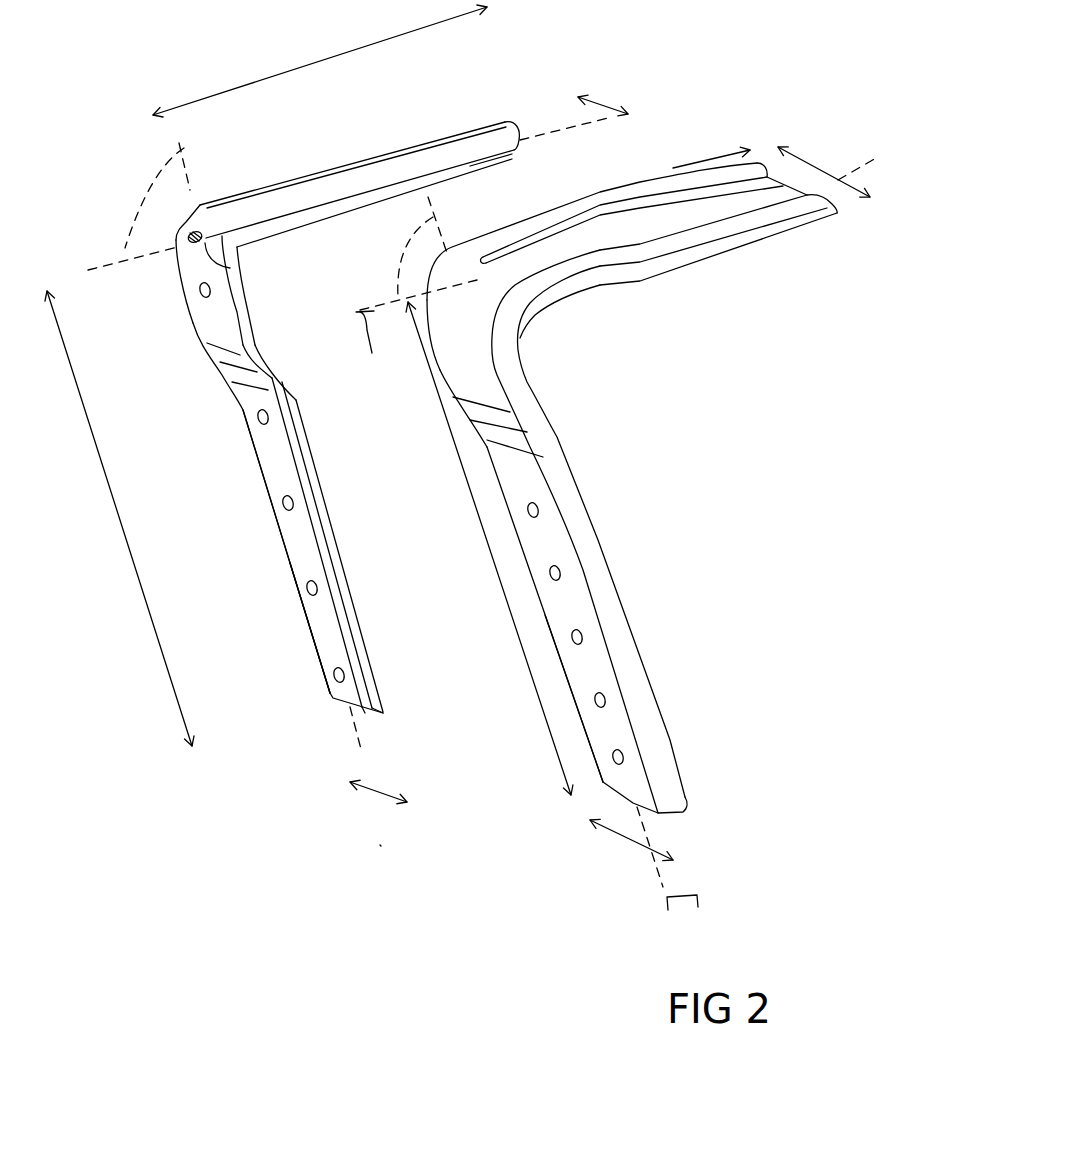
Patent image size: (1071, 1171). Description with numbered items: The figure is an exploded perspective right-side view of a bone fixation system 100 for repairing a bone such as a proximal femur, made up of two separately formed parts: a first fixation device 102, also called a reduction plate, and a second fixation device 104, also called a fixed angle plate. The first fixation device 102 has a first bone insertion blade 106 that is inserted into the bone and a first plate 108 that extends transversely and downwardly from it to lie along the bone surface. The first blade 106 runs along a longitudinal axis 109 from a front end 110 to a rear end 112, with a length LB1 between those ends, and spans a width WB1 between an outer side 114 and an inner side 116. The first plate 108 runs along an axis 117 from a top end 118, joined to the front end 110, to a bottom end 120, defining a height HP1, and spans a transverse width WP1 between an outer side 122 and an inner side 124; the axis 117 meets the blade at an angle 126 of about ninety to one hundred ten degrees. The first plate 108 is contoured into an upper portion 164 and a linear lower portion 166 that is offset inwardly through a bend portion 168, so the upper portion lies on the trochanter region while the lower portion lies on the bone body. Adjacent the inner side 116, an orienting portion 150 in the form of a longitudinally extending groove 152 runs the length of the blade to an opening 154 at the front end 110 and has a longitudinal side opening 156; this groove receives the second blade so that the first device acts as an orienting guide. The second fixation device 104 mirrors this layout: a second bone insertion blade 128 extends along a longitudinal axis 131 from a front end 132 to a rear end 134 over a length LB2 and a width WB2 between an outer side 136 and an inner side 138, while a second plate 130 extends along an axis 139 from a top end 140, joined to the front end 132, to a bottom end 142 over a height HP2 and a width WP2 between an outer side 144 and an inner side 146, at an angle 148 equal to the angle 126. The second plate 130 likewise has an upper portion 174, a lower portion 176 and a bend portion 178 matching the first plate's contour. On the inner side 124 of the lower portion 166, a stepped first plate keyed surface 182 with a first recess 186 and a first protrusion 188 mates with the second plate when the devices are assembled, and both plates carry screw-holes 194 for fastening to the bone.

The bone fixation system 100 is at (380, 845).
The first fixation device 102 is at (253, 608).
The second fixation device 104 is at (654, 612).
The first bone insertion blade 106 is at (278, 183).
The first plate 108 is at (258, 463).
The longitudinal axis 109 is at (578, 122).
The front end 110 is at (190, 223).
The rear end 112 is at (518, 122).
The outer side 114 is at (180, 222).
The inner side 116 is at (237, 243).
The longitudinal axis 117 is at (367, 758).
The top end 118 is at (184, 254).
The bottom end 120 is at (333, 700).
The outer side 122 is at (277, 530).
The inner side 124 is at (330, 541).
The angle 126 is at (148, 194).
The second bone insertion blade 128 is at (682, 262).
The second plate 130 is at (595, 567).
The longitudinal axis 131 is at (375, 343).
The front end 132 is at (519, 337).
The rear end 134 is at (842, 217).
The outer side 136 is at (739, 249).
The inner side 138 is at (542, 221).
The longitudinal axis 139 is at (676, 870).
The top end 140 is at (483, 310).
The bottom end 142 is at (658, 818).
The outer side 144 is at (557, 653).
The inner side 146 is at (648, 680).
The angle 148 is at (401, 270).
The orienting portion 150 is at (230, 268).
The groove 152 is at (246, 296).
The opening 154 is at (205, 228).
The side opening 156 is at (474, 162).
The upper portion 164 is at (204, 314).
The lower portion 166 is at (327, 620).
The bend portion 168 is at (233, 376).
The upper portion 174 is at (487, 372).
The lower portion 176 is at (614, 734).
The bend portion 178 is at (520, 442).
The first plate keyed surface 182 is at (370, 677).
The first recess 186 is at (365, 711).
The first protrusion 188 is at (381, 712).
The screw-holes 194 is at (274, 418).
The length of the first bone insertion blade LB1 is at (268, 79).
The length of the second bone insertion blade LB2 is at (673, 167).
The width of the first bone insertion blade WB1 is at (628, 108).
The width of the second bone insertion blade WB2 is at (857, 183).
The height of the first plate HP1 is at (146, 601).
The height of the second plate HP2 is at (537, 699).
The transverse width of the first plate WP1 is at (388, 800).
The transverse width of the second plate WP2 is at (627, 840).